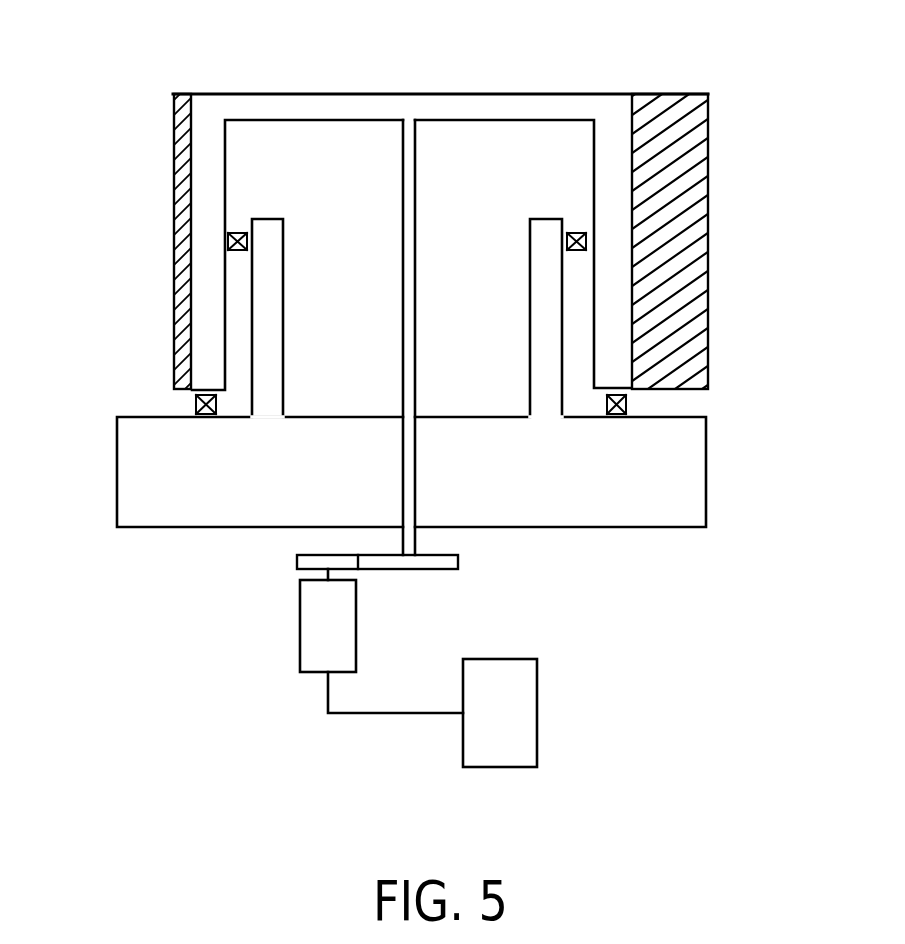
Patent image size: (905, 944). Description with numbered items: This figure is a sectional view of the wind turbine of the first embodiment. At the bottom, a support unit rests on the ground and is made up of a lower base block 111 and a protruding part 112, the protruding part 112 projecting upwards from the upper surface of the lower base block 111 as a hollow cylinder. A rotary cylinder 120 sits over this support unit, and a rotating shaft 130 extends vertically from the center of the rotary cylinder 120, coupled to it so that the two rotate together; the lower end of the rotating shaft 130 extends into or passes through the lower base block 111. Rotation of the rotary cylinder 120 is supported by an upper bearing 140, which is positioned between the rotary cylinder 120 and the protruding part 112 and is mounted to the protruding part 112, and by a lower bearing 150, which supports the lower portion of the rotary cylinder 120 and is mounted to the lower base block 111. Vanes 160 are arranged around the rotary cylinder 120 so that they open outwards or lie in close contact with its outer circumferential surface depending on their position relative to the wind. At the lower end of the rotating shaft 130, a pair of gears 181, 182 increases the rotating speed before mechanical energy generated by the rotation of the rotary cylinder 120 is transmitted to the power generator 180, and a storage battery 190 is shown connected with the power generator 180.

The lower base block 111 is at (677, 508).
The protruding part 112 is at (263, 328).
The rotary cylinder 120 is at (610, 262).
The rotating shaft 130 is at (405, 152).
The upper bearing 140 is at (228, 238).
The lower bearing 150 is at (196, 400).
The vanes 160 is at (708, 138).
The power generator 180 is at (310, 641).
The gear 181 is at (458, 562).
The gear 182 is at (305, 562).
The storage battery 190 is at (520, 733).